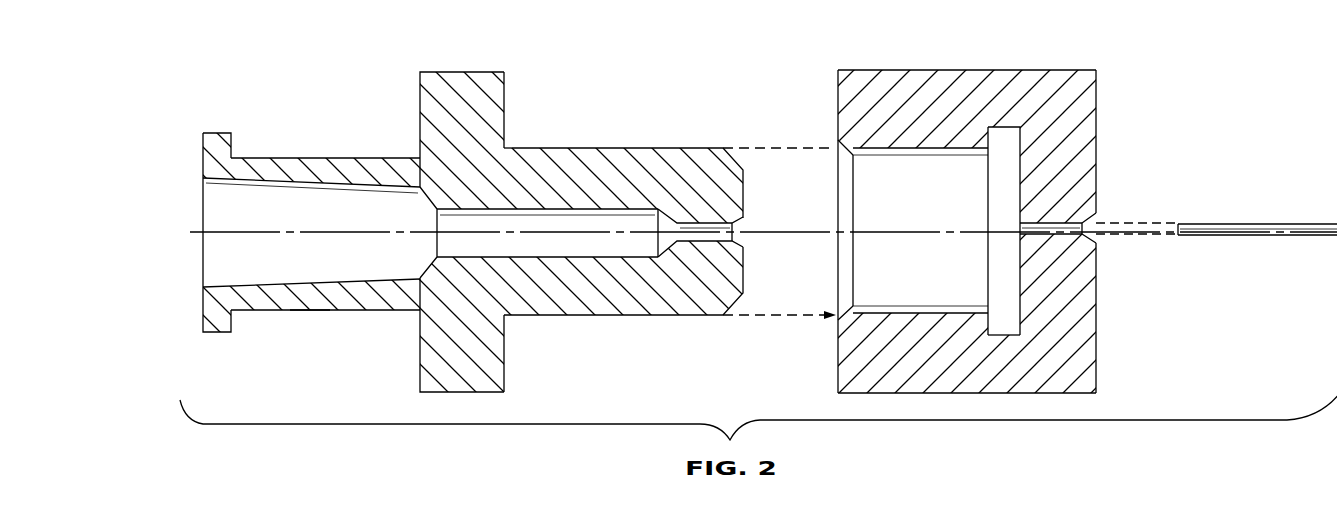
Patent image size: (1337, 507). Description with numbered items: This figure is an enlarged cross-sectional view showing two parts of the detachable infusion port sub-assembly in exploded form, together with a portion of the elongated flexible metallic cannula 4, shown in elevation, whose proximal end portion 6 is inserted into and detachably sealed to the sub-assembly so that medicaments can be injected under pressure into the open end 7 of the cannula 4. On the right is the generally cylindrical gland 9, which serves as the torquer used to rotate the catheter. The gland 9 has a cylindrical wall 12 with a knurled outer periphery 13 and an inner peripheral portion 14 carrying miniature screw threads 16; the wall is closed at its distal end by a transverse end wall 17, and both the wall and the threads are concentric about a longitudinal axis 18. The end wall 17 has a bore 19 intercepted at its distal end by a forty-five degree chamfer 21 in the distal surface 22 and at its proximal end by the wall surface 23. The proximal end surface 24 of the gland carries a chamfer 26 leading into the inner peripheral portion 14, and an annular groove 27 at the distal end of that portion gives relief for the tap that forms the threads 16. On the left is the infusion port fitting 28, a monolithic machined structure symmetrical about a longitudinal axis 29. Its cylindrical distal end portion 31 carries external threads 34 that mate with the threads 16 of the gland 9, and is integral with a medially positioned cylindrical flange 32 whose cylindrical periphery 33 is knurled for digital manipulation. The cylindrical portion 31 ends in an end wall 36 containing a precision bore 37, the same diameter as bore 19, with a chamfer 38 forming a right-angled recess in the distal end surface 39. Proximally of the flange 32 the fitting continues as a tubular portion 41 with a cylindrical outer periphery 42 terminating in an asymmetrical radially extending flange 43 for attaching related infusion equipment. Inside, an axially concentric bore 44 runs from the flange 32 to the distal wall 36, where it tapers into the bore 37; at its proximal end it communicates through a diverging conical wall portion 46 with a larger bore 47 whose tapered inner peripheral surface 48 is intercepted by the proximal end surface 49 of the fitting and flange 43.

The elongated flexible metallic cannula 4 is at (1202, 210).
The proximal end portion 6 is at (1310, 225).
The open end 7 is at (1170, 226).
The gland 9 is at (1016, 57).
The cylindrical wall 12 is at (952, 95).
The knurled outer periphery 13 is at (905, 70).
The inner peripheral portion 14 is at (952, 327).
The miniature screw threads 16 is at (873, 312).
The transverse end wall 17 is at (1077, 127).
The longitudinal axis 18 is at (923, 230).
The bore 19 is at (1053, 227).
The chamfer 21 is at (1092, 221).
The distal surface 22 is at (1096, 328).
The wall surface 23 is at (1020, 263).
The proximal end surface 24 is at (837, 92).
The chamfer 26 is at (843, 310).
The annular groove 27 is at (1007, 331).
The infusion port fitting 28 is at (519, 97).
The longitudinal axis 29 is at (238, 233).
The cylindrical distal end portion 31 is at (610, 293).
The cylindrical flange 32 is at (488, 126).
The cylindrical periphery 33 is at (462, 72).
The threads 34 is at (615, 150).
The end wall 36 is at (697, 180).
The precision bore 37 is at (703, 237).
The chamfer 38 is at (737, 240).
The distal end surface 39 is at (743, 190).
The tubular portion 41 is at (363, 298).
The cylindrical outer periphery 42 is at (300, 310).
The asymmetrical radially extending flange 43 is at (210, 148).
The bore 44 is at (555, 227).
The conical wall portion 46 is at (427, 267).
The larger bore 47 is at (313, 202).
The tapered inner peripheral surface 48 is at (257, 277).
The proximal end surface 49 is at (202, 315).